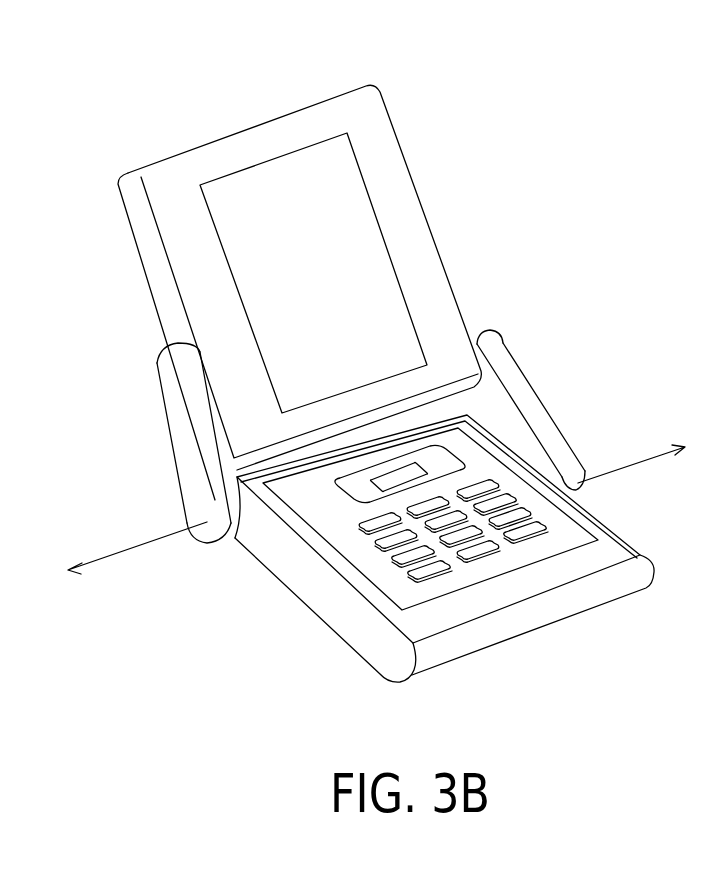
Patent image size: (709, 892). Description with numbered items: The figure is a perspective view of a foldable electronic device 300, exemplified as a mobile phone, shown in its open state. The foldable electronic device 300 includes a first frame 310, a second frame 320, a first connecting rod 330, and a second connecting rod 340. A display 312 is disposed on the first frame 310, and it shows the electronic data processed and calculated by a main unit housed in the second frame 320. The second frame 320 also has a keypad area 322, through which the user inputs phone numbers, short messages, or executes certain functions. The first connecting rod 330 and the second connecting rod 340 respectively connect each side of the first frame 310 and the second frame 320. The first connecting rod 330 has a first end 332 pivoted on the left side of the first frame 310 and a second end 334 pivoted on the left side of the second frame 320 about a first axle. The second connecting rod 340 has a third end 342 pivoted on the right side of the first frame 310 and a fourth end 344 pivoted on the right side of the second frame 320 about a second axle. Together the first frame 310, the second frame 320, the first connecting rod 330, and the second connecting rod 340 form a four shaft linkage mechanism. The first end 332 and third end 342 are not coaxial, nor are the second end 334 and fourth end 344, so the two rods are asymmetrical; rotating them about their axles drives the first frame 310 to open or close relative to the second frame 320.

The foldable electronic device 300 is at (353, 415).
The first frame 310 is at (326, 273).
The display 312 is at (292, 177).
The second frame 320 is at (468, 567).
The keypad area 322 is at (493, 557).
The first connecting rod 330 is at (118, 443).
The first end 332 is at (170, 367).
The second end 334 is at (162, 514).
The second connecting rod 340 is at (573, 372).
The third end 342 is at (497, 347).
The fourth end 344 is at (602, 411).